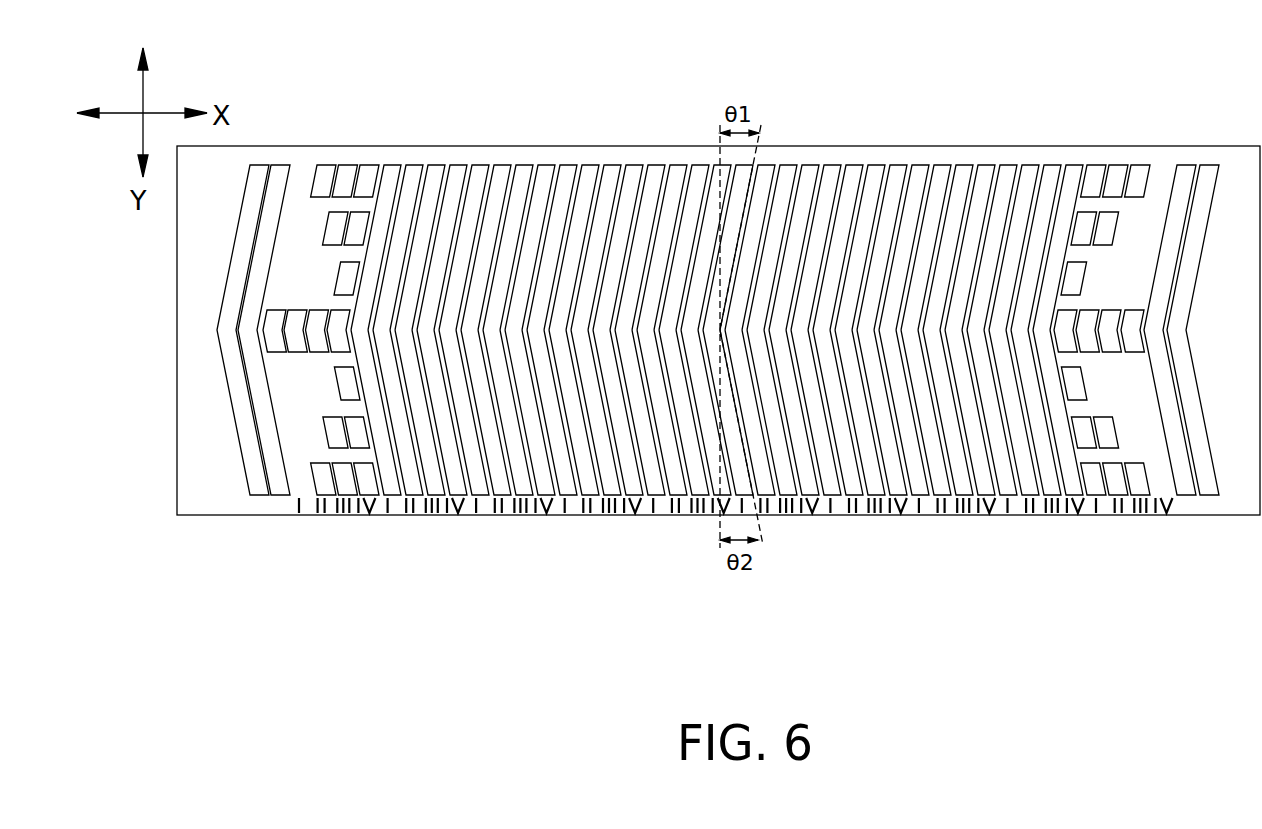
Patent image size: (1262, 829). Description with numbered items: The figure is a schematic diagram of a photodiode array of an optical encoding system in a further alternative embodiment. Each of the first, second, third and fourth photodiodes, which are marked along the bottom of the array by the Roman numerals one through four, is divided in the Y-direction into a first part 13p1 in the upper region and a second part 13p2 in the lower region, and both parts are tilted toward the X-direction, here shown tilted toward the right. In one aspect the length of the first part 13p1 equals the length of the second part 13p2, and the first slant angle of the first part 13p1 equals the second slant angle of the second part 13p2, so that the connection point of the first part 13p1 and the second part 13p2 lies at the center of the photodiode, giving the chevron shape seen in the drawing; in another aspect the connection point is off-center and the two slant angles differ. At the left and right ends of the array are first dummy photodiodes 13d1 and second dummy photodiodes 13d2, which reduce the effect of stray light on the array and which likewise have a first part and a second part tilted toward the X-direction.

The first dummy photodiodes 13d1 is at (260, 496).
The second dummy photodiodes 13d2 is at (1186, 496).
The first part 13p1 is at (1005, 180).
The second part 13p2 is at (522, 476).